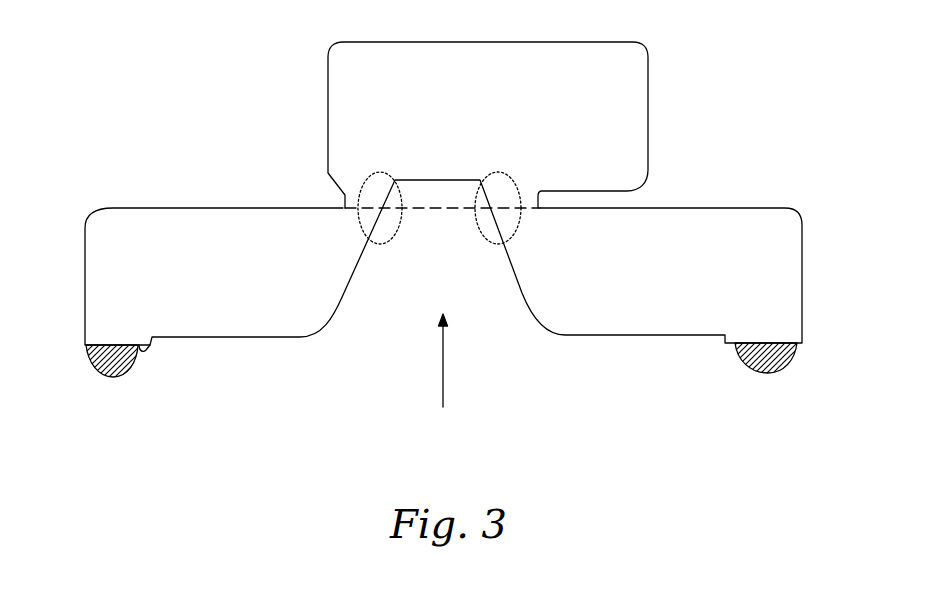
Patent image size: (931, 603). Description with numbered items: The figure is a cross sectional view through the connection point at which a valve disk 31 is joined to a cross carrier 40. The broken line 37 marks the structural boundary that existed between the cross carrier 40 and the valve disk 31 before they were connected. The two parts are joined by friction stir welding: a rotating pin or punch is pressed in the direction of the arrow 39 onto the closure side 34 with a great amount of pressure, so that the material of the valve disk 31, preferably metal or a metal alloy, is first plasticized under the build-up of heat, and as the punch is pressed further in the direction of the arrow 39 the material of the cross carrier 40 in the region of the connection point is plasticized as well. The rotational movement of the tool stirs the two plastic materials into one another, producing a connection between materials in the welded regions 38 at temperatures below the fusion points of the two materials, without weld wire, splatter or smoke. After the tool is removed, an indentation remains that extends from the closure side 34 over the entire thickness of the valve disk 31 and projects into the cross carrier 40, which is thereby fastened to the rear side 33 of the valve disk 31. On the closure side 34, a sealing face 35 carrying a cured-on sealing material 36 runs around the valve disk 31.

The valve disk 31 is at (133, 233).
The rear side 33 is at (738, 180).
The closure side 34 is at (675, 378).
The sealing face 35 is at (148, 349).
The sealing material 36 is at (120, 377).
The broken line 37 is at (452, 208).
The weld region 38 is at (368, 192).
The arrow 39 is at (440, 382).
The cross carrier 40 is at (352, 73).